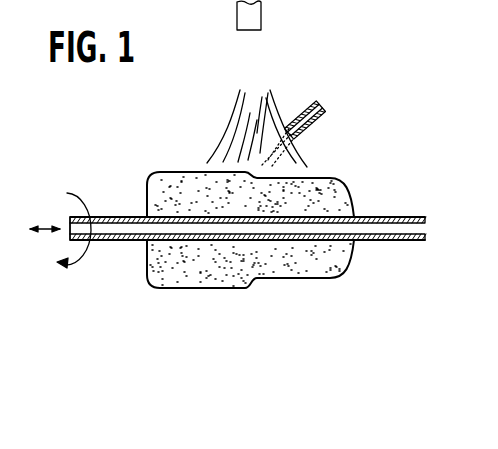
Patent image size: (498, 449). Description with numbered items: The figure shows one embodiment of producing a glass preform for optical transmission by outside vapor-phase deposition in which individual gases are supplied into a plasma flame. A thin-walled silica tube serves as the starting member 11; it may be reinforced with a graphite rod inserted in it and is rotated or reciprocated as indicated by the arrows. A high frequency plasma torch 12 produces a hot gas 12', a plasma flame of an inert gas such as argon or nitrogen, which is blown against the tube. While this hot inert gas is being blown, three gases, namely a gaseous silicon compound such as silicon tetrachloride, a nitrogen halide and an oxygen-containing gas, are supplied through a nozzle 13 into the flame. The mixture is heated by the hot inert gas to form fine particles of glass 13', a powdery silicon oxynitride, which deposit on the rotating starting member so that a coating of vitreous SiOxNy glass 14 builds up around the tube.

The starting member 11 is at (108, 240).
The high frequency plasma torch 12 is at (267, 17).
The hot gas 12' is at (257, 122).
The nozzle 13 is at (313, 129).
The fine particles of glass 13' is at (310, 152).
The SiOxNy glass 14 is at (292, 265).